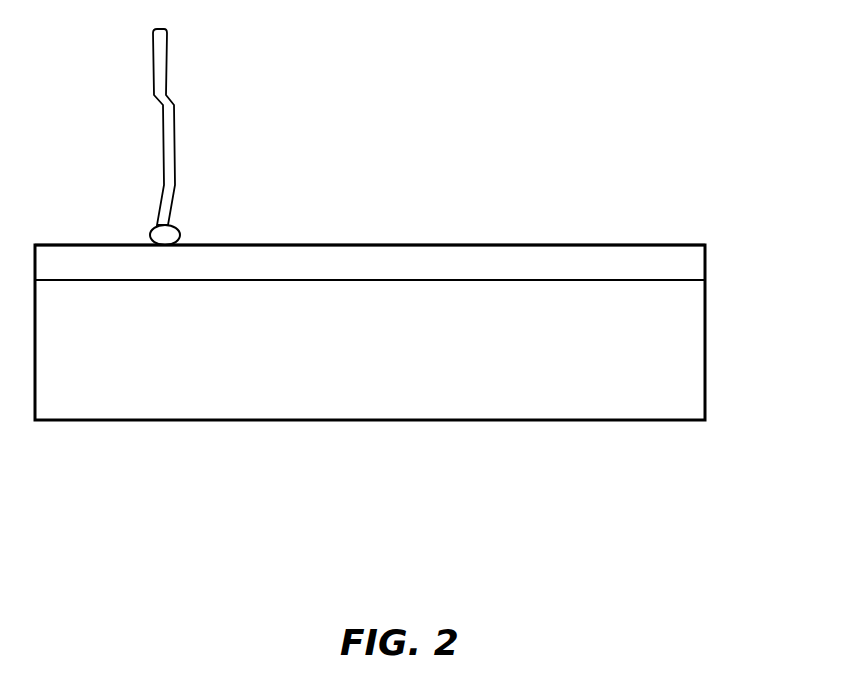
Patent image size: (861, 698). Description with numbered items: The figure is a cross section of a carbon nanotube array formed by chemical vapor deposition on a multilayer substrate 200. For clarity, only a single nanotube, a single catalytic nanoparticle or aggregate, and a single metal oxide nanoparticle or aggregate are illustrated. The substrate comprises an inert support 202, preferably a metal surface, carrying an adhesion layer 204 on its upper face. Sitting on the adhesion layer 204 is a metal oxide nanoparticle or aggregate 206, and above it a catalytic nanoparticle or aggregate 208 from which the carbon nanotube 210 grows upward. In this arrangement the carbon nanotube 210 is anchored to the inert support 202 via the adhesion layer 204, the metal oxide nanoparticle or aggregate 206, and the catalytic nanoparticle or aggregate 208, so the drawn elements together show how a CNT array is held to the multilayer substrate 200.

The multilayer substrate 200 is at (462, 452).
The inert support 202 is at (690, 355).
The adhesion layer 204 is at (695, 258).
The metal oxide nanoparticles or aggregates 206 is at (186, 232).
The catalytic nanoparticles or aggregates 208 is at (174, 219).
The carbon nanotubes 210 is at (172, 43).